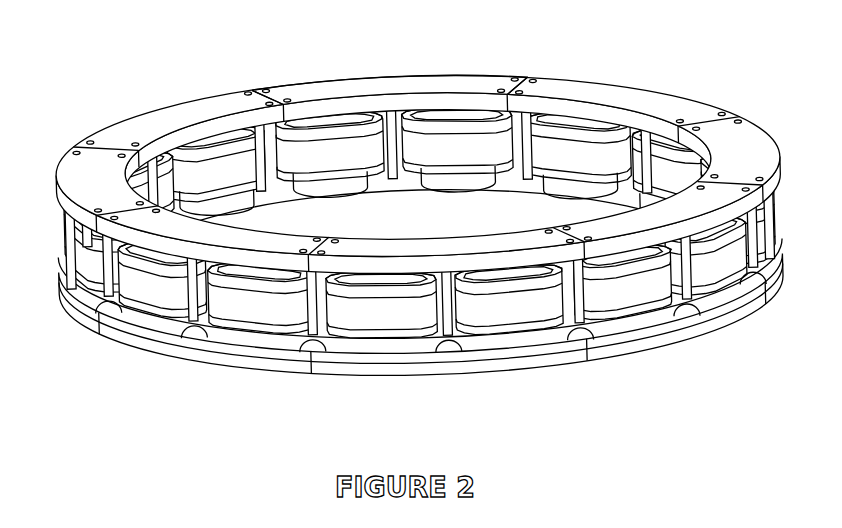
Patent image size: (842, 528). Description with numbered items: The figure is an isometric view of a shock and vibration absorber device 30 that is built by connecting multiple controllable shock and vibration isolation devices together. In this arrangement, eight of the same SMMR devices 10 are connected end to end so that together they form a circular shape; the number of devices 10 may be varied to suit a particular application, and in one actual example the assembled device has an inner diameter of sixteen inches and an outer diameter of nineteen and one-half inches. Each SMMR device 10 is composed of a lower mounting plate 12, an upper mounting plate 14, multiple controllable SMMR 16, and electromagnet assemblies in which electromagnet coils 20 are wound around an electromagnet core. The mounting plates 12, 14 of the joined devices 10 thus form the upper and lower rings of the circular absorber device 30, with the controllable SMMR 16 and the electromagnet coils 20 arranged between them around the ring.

The SMMR device 10 is at (534, 76).
The lower mounting plate 12 is at (340, 364).
The upper mounting plate 14 is at (512, 263).
The controllable SMMR 16 is at (408, 350).
The electromagnet coils 20 is at (368, 322).
The shock and vibration absorber device 30 is at (420, 234).